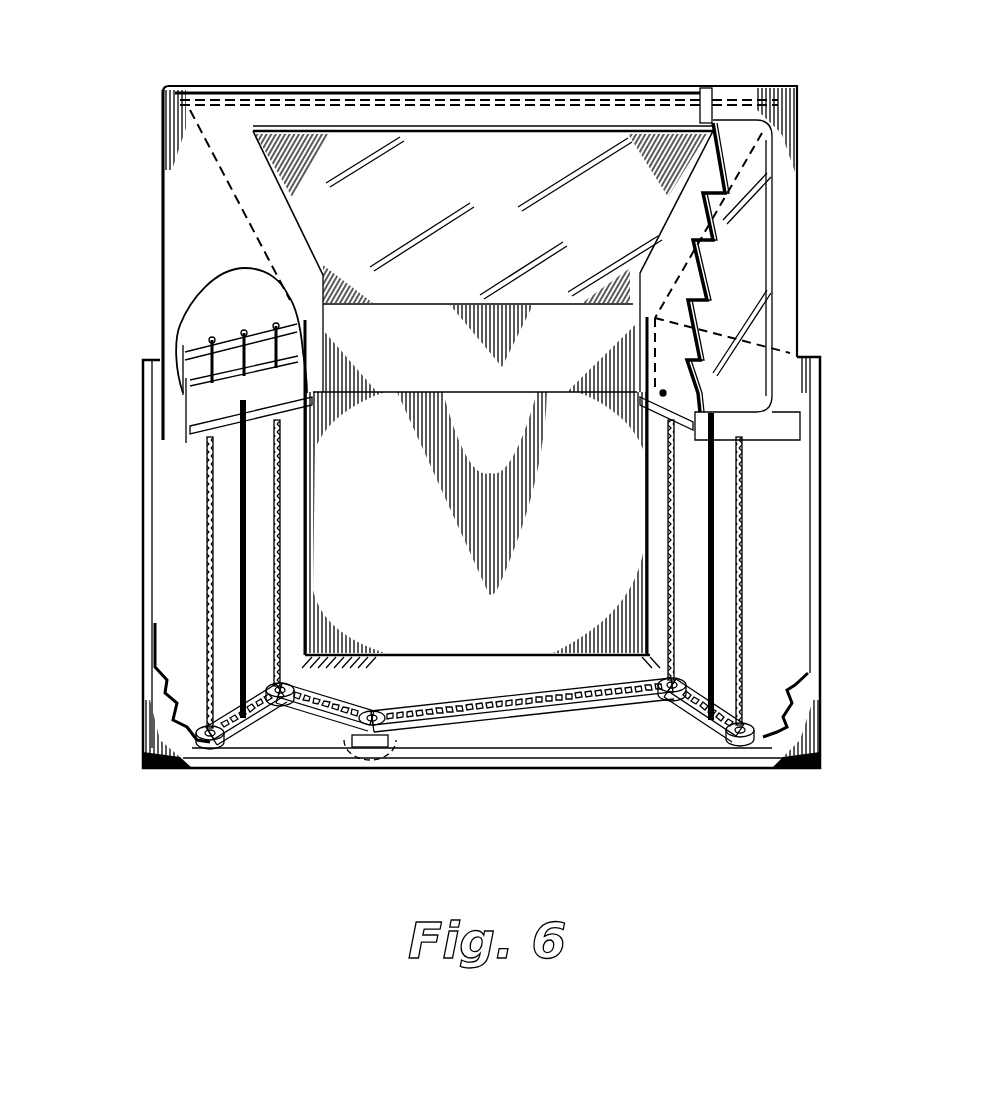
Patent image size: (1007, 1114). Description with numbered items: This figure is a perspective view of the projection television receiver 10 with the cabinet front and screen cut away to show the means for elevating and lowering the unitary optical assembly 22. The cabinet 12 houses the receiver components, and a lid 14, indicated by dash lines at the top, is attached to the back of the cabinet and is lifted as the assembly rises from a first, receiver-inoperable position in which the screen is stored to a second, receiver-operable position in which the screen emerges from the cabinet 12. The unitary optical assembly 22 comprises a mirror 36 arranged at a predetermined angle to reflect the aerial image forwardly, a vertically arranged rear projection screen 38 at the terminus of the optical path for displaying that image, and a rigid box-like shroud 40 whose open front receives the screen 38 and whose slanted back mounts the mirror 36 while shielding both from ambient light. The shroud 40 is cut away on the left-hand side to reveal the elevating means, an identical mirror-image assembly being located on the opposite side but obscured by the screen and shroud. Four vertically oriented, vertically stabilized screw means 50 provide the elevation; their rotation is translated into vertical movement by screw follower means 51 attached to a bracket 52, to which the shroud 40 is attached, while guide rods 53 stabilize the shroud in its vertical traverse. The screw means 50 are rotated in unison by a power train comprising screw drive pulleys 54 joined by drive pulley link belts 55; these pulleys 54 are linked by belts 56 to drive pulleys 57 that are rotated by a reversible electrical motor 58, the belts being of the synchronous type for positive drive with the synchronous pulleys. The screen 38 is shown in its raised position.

The projection television receiver 10 is at (130, 472).
The cabinet means 12 is at (820, 606).
The lid means 14 is at (633, 96).
The unitary optical assembly means 22 is at (815, 200).
The mirror means 36 is at (318, 234).
The rear projection screen means 38 is at (742, 274).
The shroud means 40 is at (160, 147).
The screw means 50 is at (275, 512).
The screw follower means 51 is at (240, 353).
The bracket 52 is at (225, 413).
The guide rods 53 is at (242, 597).
The screw means drive pulleys 54 is at (240, 672).
The drive pulley link belts 55 is at (475, 757).
The belts 56 is at (475, 757).
The drive pulleys 57 is at (373, 773).
The reversible electrical motor 58 is at (373, 758).